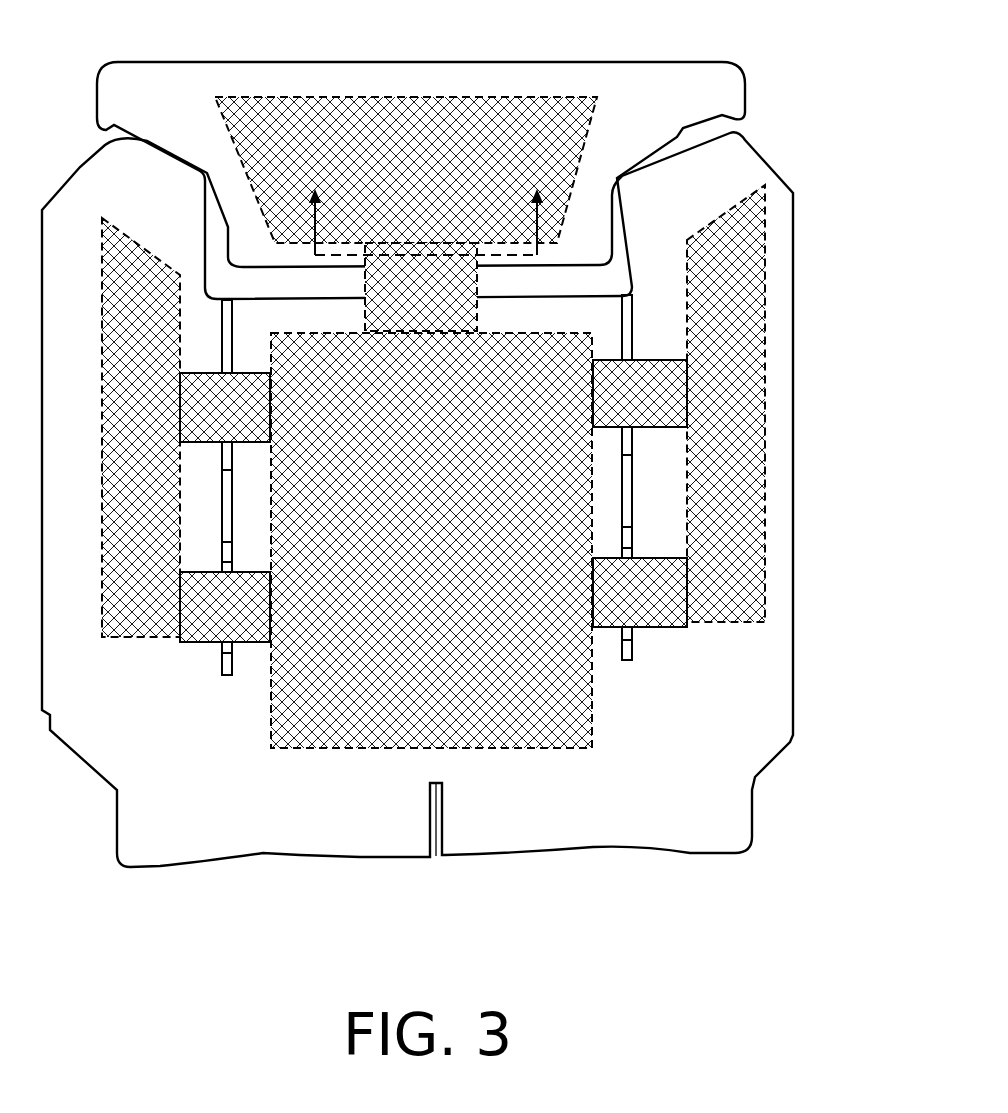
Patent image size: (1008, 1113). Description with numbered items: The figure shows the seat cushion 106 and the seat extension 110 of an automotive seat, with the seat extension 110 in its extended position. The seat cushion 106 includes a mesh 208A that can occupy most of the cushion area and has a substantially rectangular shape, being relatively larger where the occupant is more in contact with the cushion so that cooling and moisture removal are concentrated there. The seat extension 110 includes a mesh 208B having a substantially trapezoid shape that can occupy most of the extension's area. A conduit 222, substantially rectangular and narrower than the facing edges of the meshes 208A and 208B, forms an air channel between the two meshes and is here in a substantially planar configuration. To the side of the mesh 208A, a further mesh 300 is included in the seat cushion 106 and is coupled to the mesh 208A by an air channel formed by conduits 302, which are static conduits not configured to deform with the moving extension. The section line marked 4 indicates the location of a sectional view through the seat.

The seat extension 110 is at (653, 61).
The seat cushion 106 is at (793, 668).
The mesh 208B is at (406, 170).
The conduit 222 is at (421, 287).
The mesh 208A is at (431, 540).
The mesh 300 is at (433, 411).
The conduit 302 is at (433, 501).
The section line for FIG. 4 is at (426, 207).